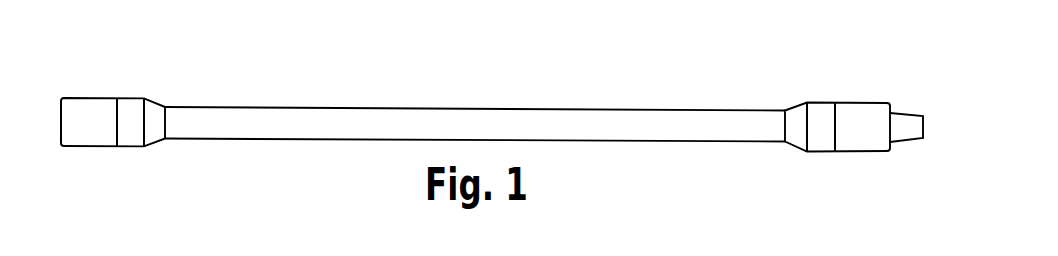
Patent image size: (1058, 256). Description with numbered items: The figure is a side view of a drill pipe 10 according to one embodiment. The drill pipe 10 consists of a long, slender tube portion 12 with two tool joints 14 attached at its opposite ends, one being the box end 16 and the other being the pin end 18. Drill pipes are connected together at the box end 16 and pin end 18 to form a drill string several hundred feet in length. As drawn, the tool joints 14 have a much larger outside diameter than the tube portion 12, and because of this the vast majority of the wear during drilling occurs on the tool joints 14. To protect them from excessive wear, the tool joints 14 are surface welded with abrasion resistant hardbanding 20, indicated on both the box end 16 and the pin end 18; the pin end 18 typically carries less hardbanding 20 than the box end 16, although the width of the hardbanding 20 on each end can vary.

The drill pipe 10 is at (271, 66).
The tube portion 12 is at (507, 108).
The tool joints 14 is at (97, 69).
The box end 16 is at (61, 124).
The pin end 18 is at (923, 126).
The hardbanding 20 is at (130, 137).